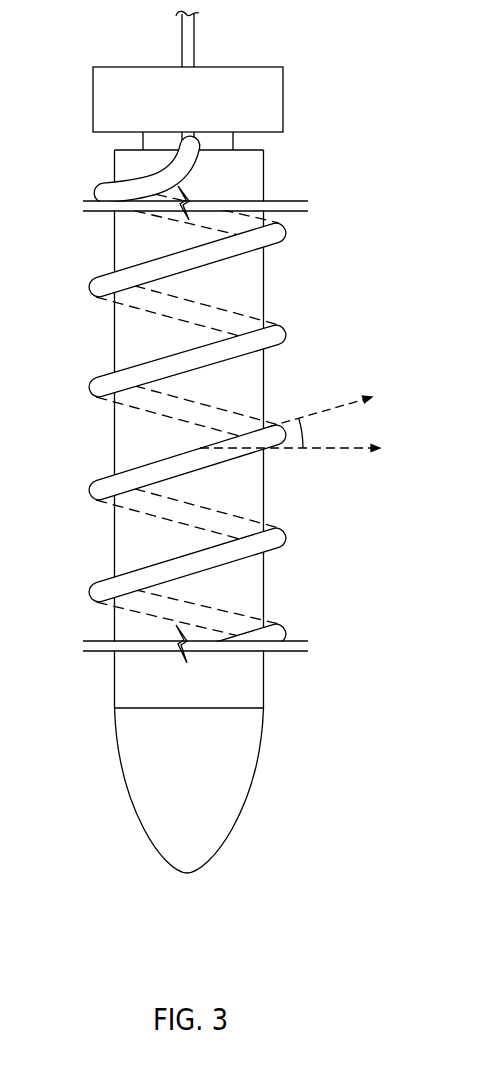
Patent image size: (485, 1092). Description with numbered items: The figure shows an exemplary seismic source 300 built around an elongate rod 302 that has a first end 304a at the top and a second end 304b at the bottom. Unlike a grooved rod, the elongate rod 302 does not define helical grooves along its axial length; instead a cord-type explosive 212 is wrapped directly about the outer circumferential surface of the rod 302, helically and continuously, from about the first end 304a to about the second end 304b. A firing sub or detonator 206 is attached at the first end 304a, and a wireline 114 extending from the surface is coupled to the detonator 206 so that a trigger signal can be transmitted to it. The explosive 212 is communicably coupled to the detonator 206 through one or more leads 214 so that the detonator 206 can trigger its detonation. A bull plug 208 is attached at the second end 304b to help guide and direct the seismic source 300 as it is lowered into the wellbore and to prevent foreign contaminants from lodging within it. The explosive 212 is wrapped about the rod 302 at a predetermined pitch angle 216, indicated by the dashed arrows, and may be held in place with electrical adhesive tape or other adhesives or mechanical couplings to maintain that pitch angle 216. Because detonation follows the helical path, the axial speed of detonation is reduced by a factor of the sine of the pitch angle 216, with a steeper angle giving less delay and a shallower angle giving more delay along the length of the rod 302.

The wireline 114 is at (196, 40).
The detonator 206 is at (278, 106).
The seismic source 300 is at (203, 442).
The leads 214 is at (196, 138).
The first end 304a is at (260, 174).
The elongate rod 302 is at (128, 342).
The explosive 212 is at (124, 189).
The pitch angle 216 is at (313, 433).
The second end 304b is at (120, 681).
The bull plug 208 is at (240, 798).